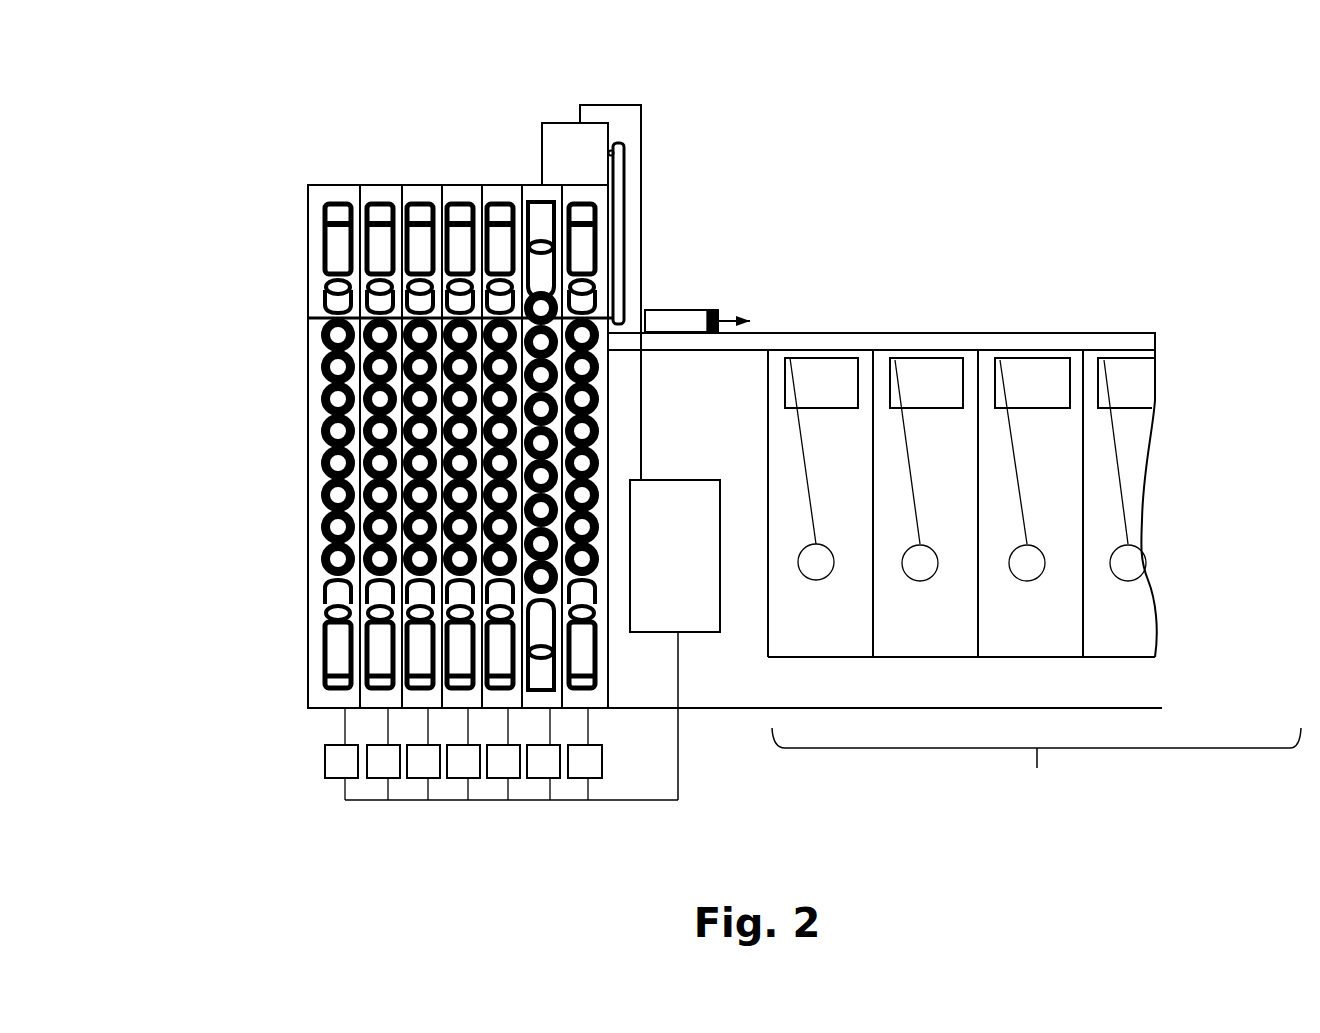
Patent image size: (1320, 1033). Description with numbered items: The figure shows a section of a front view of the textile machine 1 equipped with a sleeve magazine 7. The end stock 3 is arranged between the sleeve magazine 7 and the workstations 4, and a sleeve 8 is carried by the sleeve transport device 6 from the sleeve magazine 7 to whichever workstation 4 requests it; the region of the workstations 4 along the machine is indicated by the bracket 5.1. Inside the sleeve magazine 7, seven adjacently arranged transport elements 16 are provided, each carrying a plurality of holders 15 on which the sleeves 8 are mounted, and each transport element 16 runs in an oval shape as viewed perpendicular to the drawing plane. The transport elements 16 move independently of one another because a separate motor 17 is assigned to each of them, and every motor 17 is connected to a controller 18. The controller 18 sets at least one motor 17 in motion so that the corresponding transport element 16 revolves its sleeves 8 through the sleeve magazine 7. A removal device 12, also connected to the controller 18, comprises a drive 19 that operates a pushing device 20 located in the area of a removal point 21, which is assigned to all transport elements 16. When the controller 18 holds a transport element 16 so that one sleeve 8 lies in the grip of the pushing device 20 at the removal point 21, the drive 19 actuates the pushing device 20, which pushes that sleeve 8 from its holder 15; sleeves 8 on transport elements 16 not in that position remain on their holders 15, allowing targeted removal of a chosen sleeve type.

The textile machine 1 is at (970, 268).
The end stock 3 is at (698, 690).
The workstation 4 is at (1130, 620).
The storage area 5.1 is at (1036, 769).
The sleeve transport device 6 is at (1062, 333).
The sleeve magazine 7 is at (292, 226).
The sleeve 8 is at (322, 437).
The removal device 12 is at (622, 130).
The holder 15 is at (336, 398).
The transport element 16 is at (320, 178).
The motor 17 is at (332, 760).
The controller 18 is at (663, 515).
The drive 19 is at (580, 150).
The pushing device 20 is at (626, 267).
The removal point 21 is at (295, 318).